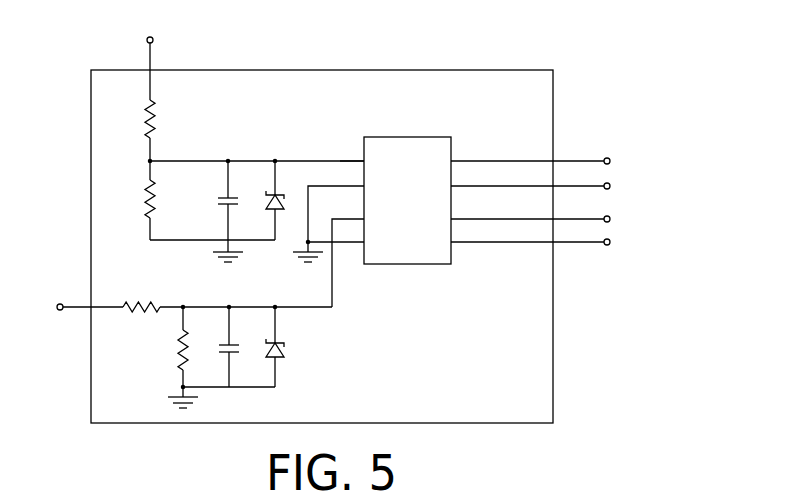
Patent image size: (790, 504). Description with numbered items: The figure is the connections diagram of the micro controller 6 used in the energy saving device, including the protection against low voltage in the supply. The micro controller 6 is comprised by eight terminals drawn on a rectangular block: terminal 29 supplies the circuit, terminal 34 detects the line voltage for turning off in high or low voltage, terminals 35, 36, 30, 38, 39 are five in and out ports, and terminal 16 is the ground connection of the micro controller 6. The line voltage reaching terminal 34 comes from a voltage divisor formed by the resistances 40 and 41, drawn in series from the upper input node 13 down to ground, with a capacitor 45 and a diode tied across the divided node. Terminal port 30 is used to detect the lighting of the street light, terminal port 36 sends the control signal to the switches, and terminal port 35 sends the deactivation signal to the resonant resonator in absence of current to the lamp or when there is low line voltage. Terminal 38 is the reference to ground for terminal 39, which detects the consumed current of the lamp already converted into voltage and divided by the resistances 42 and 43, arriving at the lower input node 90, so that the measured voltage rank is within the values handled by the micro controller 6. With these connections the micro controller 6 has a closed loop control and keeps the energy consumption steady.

The micro controller 6 is at (322, 211).
The power supply input terminal 13 is at (149, 56).
The resistance 40 is at (164, 140).
The resistance 41 is at (195, 210).
The capacitor 45 is at (214, 211).
The resistance 42 is at (227, 292).
The resistance 43 is at (171, 357).
The input signal terminal 90 is at (75, 307).
The terminal 34 is at (366, 162).
The terminal 38 is at (342, 218).
The terminal 39 is at (362, 257).
The terminal 16 is at (350, 244).
The terminal 29 is at (532, 162).
The terminal port 30 is at (532, 187).
The terminal port 36 is at (532, 219).
The terminal port 35 is at (532, 244).